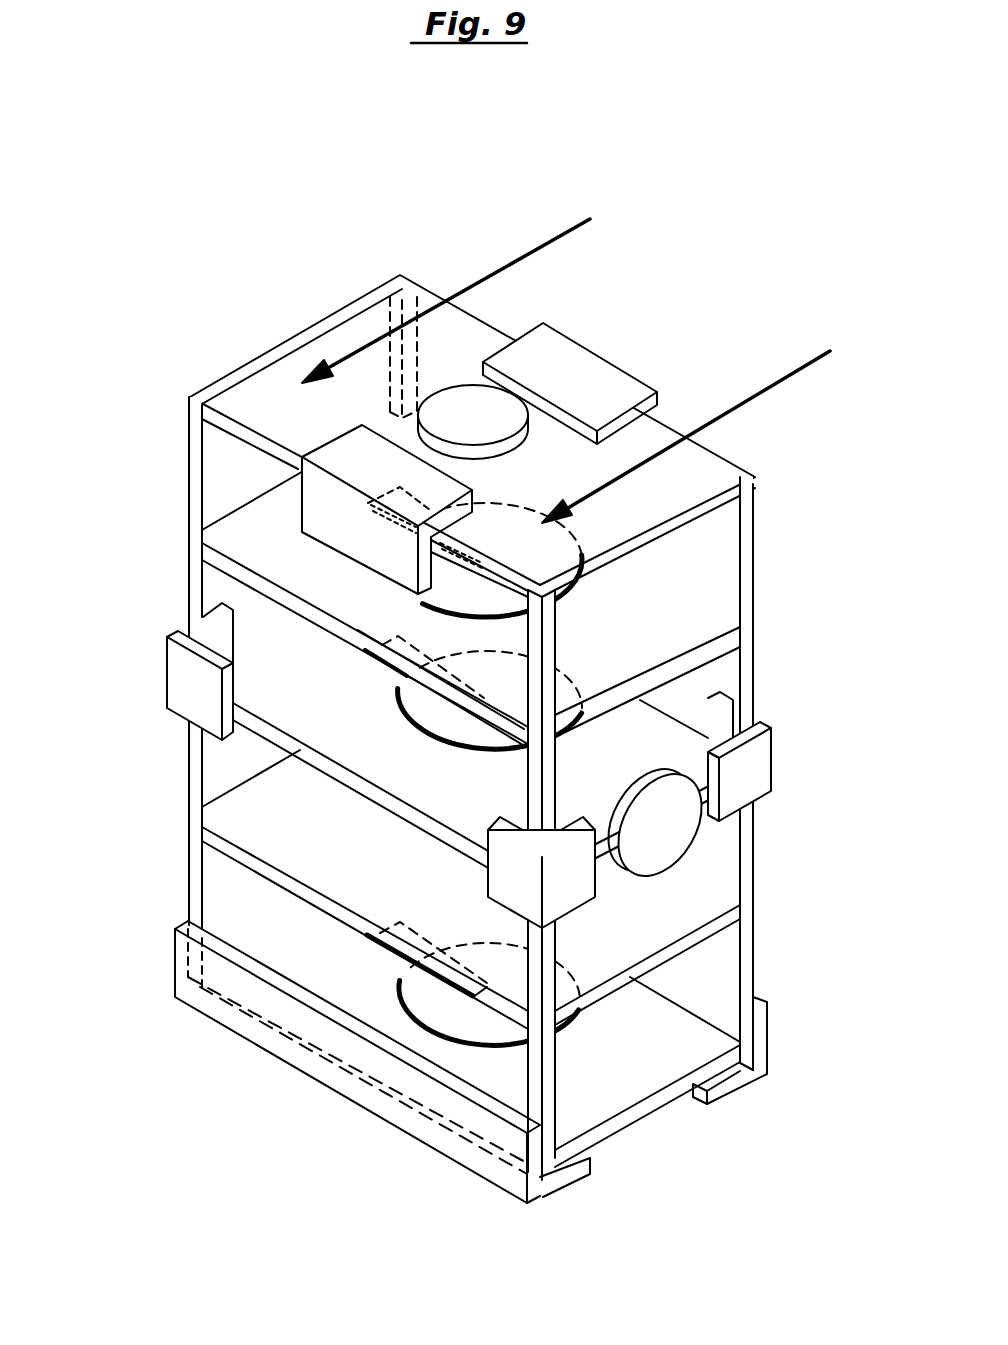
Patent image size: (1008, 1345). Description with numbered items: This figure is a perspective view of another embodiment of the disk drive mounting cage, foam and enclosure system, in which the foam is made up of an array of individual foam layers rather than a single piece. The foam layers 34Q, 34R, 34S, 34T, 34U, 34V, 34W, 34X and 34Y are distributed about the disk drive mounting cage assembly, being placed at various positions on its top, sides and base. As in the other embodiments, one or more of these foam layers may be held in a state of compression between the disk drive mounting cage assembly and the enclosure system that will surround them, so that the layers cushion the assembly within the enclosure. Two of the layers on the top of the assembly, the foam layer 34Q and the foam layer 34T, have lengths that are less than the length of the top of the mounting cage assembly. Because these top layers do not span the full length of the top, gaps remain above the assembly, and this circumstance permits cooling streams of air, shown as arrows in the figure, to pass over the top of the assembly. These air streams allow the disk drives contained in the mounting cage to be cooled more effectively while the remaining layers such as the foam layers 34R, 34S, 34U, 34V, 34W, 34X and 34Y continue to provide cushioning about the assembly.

The foam layer 34Q is at (613, 383).
The foam layer 34R is at (373, 1095).
The foam layer 34S is at (760, 1038).
The foam layer 34T is at (330, 510).
The foam layer 34U is at (490, 423).
The foam layer 34V is at (563, 885).
The foam layer 34W is at (675, 832).
The foam layer 34X is at (757, 760).
The foam layer 34Y is at (190, 686).